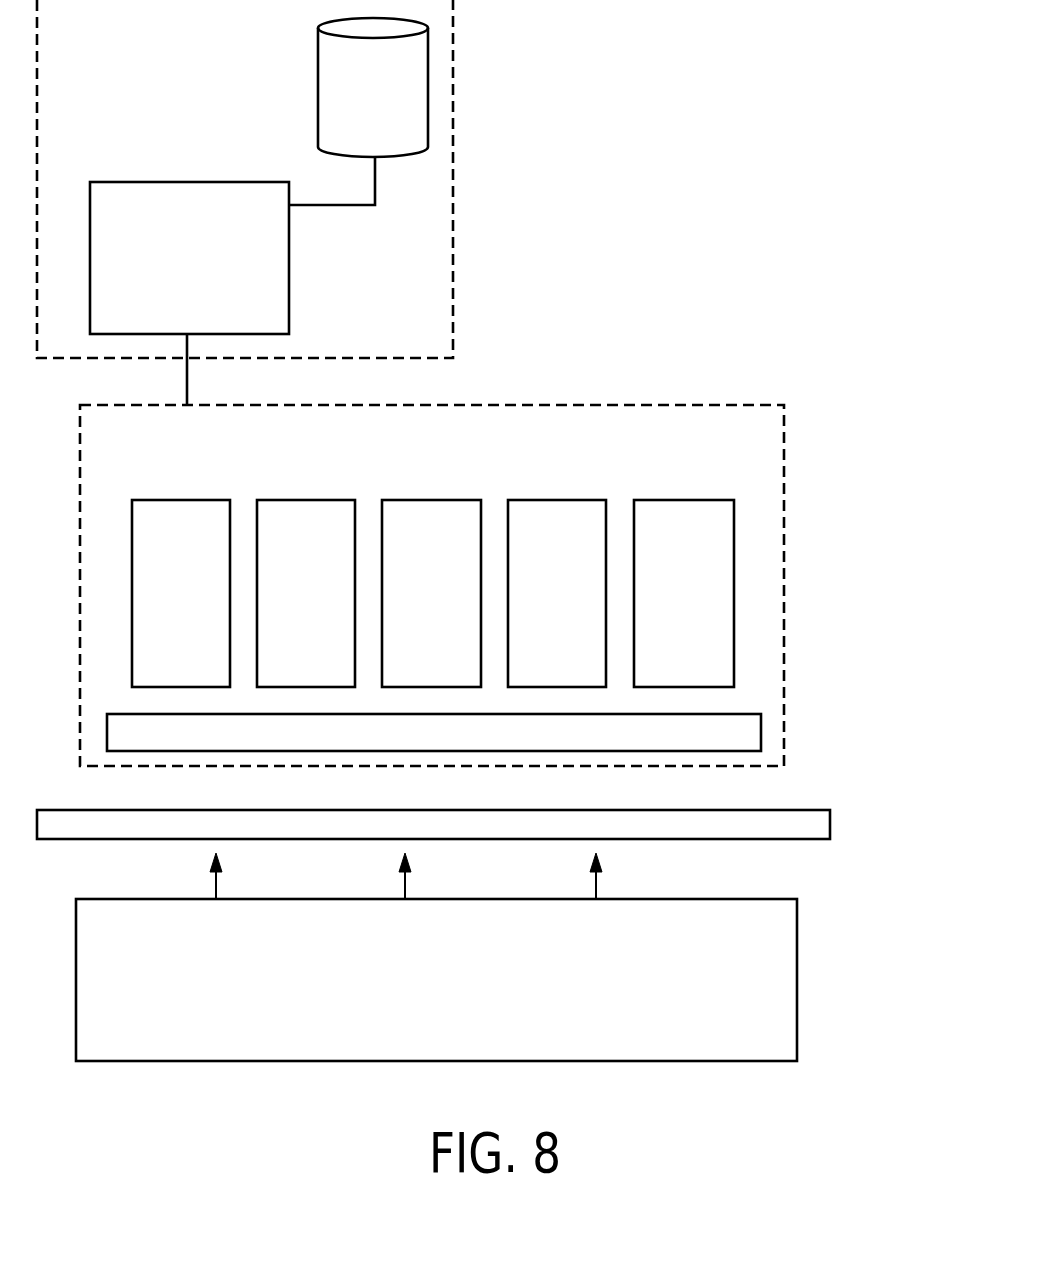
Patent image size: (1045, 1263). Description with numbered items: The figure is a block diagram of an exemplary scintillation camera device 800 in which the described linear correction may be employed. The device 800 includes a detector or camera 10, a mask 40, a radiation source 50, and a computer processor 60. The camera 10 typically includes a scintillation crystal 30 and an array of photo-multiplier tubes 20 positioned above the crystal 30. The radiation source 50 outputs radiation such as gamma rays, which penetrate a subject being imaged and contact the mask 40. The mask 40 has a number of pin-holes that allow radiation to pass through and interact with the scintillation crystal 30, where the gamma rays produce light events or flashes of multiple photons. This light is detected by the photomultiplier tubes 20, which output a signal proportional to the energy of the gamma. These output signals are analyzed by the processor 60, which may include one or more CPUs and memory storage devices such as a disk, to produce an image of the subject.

The device 800 is at (612, 296).
The computer processor 60 is at (453, 110).
The detector or camera 10 is at (482, 586).
The photo-multiplier tubes 20 is at (430, 498).
The scintillation crystal 30 is at (761, 733).
The mask 40 is at (848, 818).
The radiation source 50 is at (797, 975).